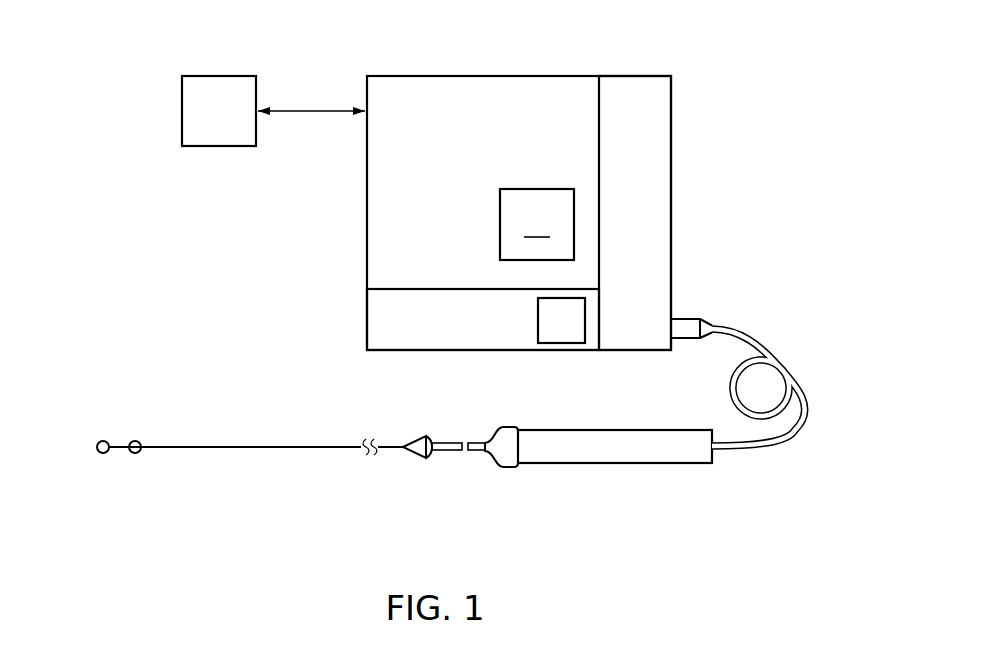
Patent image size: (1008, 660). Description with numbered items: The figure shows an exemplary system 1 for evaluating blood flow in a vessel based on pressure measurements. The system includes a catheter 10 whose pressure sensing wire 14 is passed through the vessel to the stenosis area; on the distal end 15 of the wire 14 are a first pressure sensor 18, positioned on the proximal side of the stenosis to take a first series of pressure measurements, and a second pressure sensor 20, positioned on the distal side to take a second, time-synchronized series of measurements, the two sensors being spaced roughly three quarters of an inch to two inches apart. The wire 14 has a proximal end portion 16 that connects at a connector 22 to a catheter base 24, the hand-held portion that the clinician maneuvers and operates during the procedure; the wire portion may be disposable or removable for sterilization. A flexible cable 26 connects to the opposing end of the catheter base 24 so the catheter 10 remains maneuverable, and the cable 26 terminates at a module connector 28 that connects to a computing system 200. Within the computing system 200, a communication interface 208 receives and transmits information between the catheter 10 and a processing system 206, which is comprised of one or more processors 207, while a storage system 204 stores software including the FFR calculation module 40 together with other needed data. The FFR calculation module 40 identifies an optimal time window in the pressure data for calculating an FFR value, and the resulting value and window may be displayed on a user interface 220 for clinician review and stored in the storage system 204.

The system 1 is at (760, 35).
The catheter 10 is at (567, 523).
The pressure sensing wire 14 is at (252, 449).
The distal end 15 is at (113, 465).
The proximal end portion 16 is at (388, 466).
The first pressure sensor 18 is at (137, 440).
The second pressure sensor 20 is at (104, 440).
The connector 22 is at (504, 468).
The catheter base 24 is at (615, 464).
The cable 26 is at (810, 388).
The module connector 28 is at (688, 319).
The FFR calculation module 40 is at (537, 224).
The computing system 200 is at (512, 76).
The storage system 204 is at (367, 187).
The processing system 206 is at (475, 351).
The processor 207 is at (563, 344).
The communication interface 208 is at (663, 120).
The user interface 220 is at (216, 76).